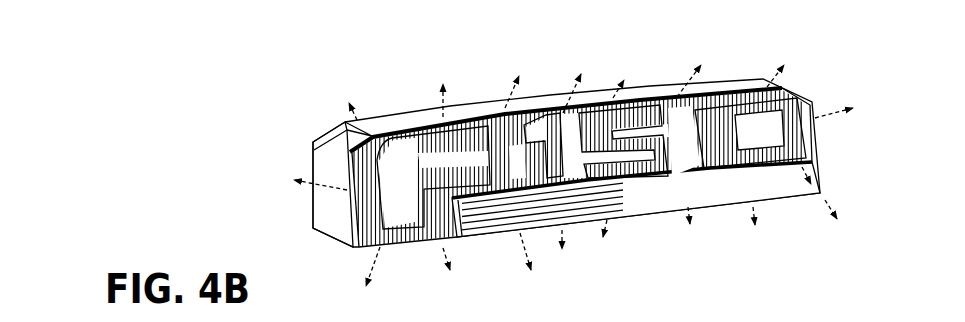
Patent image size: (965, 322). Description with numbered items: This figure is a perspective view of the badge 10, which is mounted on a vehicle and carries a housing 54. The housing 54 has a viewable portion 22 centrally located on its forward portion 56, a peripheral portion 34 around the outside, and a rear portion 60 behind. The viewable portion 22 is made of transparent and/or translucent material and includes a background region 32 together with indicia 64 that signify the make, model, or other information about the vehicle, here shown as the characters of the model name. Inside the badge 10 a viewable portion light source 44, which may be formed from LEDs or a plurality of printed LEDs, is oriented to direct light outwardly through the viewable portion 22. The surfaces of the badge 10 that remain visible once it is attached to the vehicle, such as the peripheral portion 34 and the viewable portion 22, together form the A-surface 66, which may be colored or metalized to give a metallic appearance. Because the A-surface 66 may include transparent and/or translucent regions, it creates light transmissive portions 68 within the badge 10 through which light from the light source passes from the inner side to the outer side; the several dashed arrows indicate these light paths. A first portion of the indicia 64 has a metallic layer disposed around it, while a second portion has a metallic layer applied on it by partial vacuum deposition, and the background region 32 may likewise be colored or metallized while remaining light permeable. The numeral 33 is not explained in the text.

The badge 10 is at (843, 76).
The viewable portion 22 is at (660, 136).
The background region 32 is at (367, 212).
The peripheral portion 34 is at (322, 169).
The viewable portion light source 44 is at (545, 126).
The housing 54 is at (718, 83).
The forward portion 56 is at (368, 250).
The rear portion 60 is at (408, 110).
The indicia 64 is at (798, 137).
The A-surface 66 is at (510, 108).
The light transmissive portion 68 is at (413, 242).
The rear wall 33 is at (885, 316).